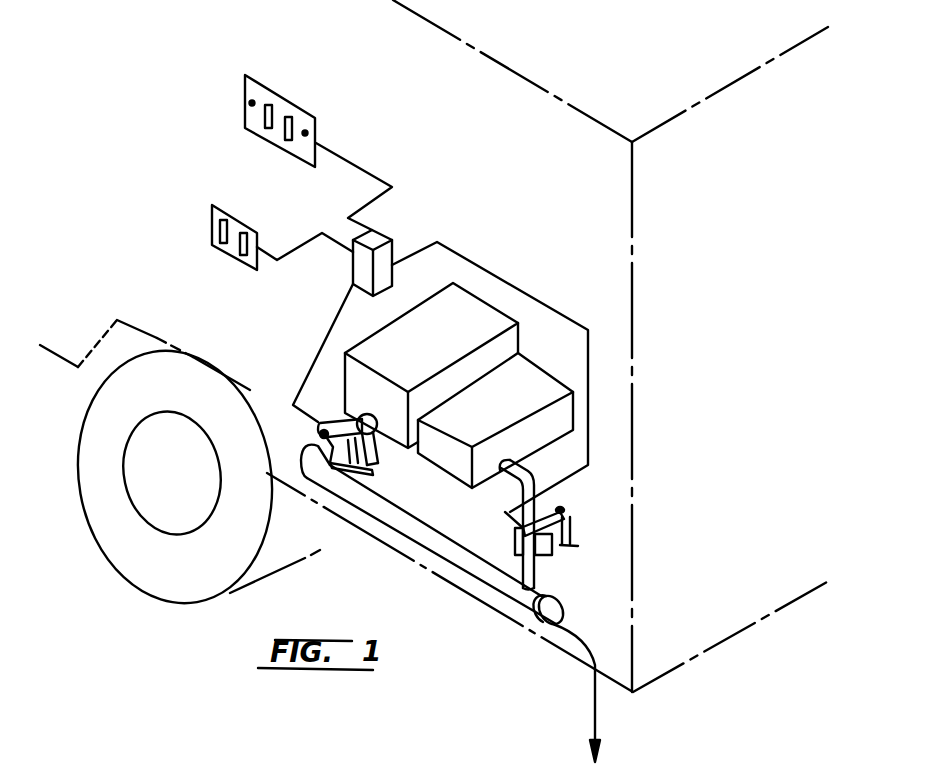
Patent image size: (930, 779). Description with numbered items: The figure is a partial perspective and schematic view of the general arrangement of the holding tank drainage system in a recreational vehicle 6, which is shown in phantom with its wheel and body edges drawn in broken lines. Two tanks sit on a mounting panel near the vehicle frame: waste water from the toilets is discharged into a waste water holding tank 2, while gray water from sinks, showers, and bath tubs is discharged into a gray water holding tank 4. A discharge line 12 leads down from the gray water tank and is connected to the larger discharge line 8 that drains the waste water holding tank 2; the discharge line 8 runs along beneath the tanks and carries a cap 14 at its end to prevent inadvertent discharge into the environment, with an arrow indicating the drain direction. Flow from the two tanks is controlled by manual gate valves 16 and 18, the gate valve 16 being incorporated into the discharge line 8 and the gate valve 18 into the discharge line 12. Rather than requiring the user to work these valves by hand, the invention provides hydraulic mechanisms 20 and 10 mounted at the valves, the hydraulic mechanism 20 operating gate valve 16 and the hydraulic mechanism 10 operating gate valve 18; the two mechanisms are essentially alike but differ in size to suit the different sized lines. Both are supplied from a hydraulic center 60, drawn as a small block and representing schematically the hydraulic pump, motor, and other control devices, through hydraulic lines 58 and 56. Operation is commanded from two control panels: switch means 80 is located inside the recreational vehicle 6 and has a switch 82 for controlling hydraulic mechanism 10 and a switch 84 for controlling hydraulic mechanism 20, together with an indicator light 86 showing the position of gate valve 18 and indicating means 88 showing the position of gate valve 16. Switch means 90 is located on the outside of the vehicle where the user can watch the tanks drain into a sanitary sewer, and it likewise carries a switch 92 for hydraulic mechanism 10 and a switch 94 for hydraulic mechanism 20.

The waste water holding tank 2 is at (402, 329).
The gray water holding tank 4 is at (527, 383).
The recreational vehicle 6 is at (687, 211).
The discharge line 8 is at (386, 508).
The hydraulic mechanism 10 is at (576, 522).
The discharge line 12 is at (522, 476).
The cap 14 is at (565, 607).
The manual gate valve 16 is at (370, 472).
The manual gate valve 18 is at (543, 548).
The hydraulic mechanism 20 is at (372, 460).
The hydraulic line 56 is at (332, 322).
The hydraulic line 58 is at (508, 283).
The hydraulic center 60 is at (379, 236).
The switch means 80 is at (290, 98).
The switch 82 is at (295, 122).
The switch 84 is at (268, 102).
The indicator light 86 is at (306, 133).
The indicating means 88 is at (251, 103).
The switch means 90 is at (238, 214).
The switch 92 is at (258, 242).
The switch 94 is at (225, 222).